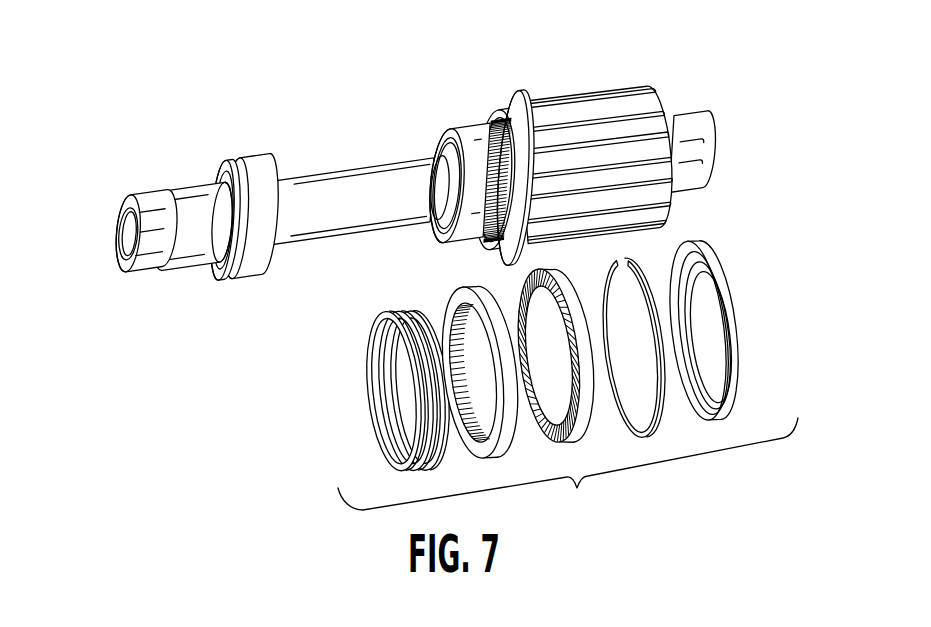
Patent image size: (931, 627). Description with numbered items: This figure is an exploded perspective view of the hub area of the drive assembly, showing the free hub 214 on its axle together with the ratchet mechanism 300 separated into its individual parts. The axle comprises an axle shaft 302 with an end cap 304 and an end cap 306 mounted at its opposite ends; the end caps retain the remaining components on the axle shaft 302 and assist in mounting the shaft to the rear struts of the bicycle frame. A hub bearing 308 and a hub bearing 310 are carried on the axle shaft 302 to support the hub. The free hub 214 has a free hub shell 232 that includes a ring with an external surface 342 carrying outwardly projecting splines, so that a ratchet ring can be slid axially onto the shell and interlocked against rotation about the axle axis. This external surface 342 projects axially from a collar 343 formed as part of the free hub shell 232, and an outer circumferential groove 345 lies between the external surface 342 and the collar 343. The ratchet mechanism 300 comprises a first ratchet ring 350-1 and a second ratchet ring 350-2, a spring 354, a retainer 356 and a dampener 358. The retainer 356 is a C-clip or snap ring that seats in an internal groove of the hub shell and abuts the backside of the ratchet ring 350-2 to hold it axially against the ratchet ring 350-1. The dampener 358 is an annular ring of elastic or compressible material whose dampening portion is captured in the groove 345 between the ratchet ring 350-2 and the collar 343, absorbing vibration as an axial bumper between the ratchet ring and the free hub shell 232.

The free hub 214 is at (568, 84).
The free hub shell 232 is at (623, 87).
The ratchet mechanism 300 is at (568, 470).
The axle shaft 302 is at (337, 172).
The end cap 304 is at (680, 117).
The end cap 306 is at (167, 190).
The hub bearing 308 is at (242, 157).
The hub bearing 310 is at (443, 130).
The external surface 342 is at (470, 117).
The collar 343 is at (478, 117).
The outer circumferential groove 345 is at (502, 127).
The ratchet ring 350-1 is at (468, 293).
The ratchet ring 350-2 is at (522, 287).
The spring 354 is at (373, 327).
The retainer 356 is at (640, 278).
The dampener 358 is at (733, 383).